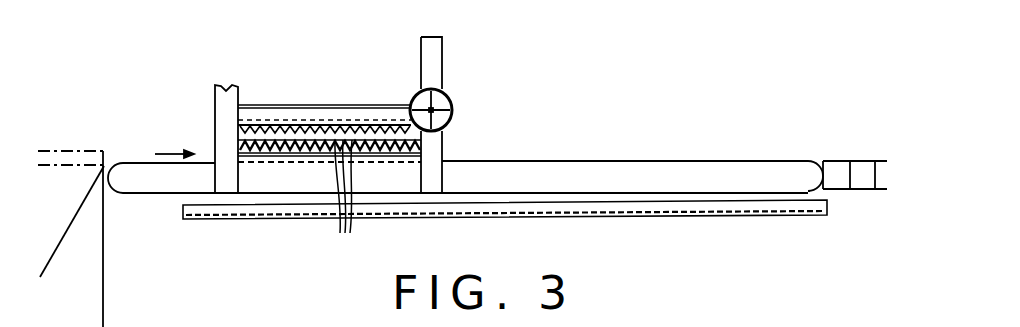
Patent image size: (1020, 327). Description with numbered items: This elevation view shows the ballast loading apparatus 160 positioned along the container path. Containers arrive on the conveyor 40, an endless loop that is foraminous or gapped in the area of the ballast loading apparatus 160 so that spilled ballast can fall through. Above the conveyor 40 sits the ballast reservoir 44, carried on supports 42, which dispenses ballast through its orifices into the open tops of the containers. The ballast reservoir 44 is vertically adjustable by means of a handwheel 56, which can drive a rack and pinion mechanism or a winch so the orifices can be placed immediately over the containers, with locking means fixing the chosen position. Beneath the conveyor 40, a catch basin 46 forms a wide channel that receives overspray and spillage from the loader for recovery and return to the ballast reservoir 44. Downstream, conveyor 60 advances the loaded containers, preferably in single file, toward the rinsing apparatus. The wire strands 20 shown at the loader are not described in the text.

The wire strands / filaments 20 is at (341, 200).
The conveyor 40 is at (660, 161).
The supports 42 is at (222, 132).
The ballast reservoir 44 is at (259, 109).
The catch basin 46 is at (487, 207).
The handwheel 56 is at (445, 94).
The conveyor 60 is at (862, 160).
The ballast loading apparatus 160 is at (320, 78).